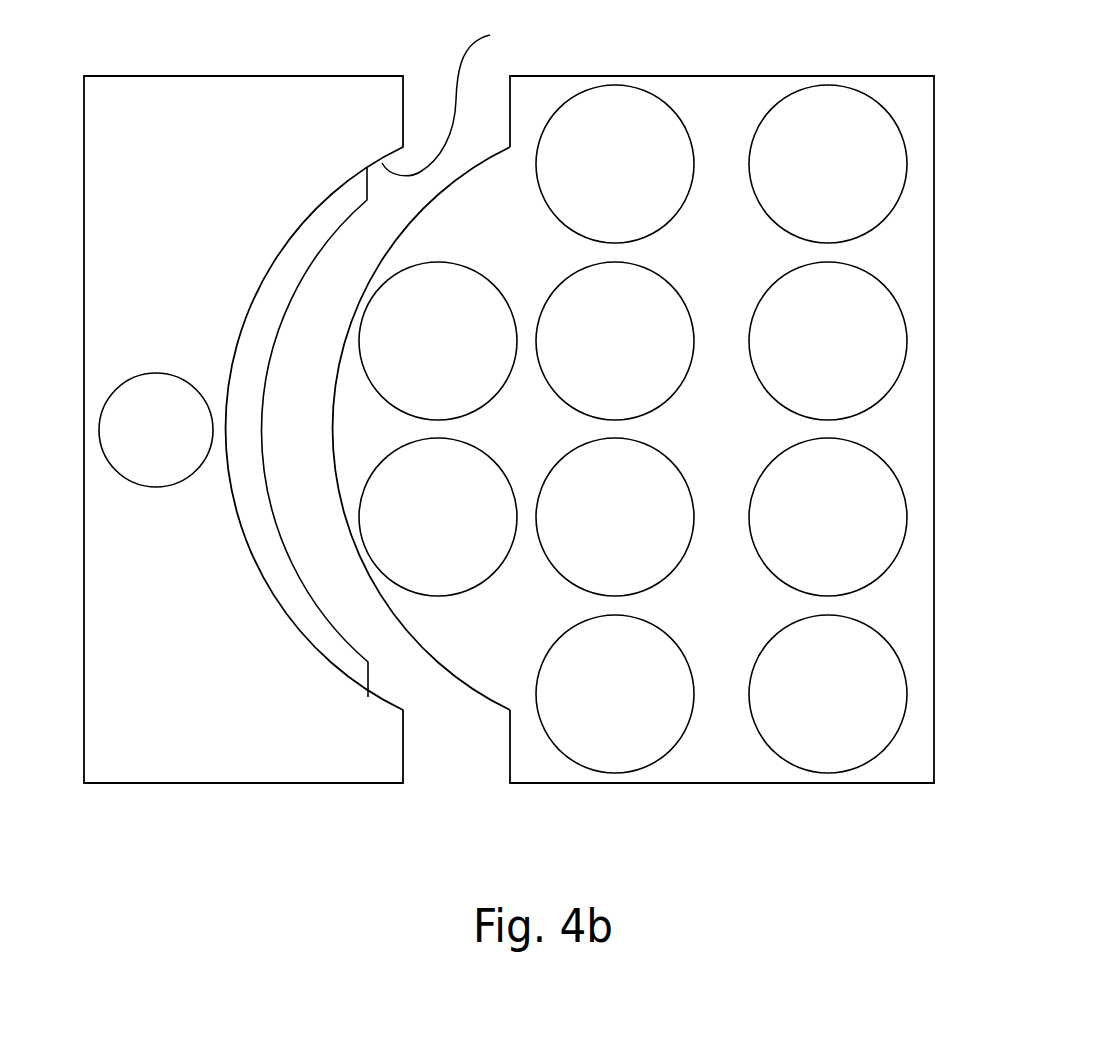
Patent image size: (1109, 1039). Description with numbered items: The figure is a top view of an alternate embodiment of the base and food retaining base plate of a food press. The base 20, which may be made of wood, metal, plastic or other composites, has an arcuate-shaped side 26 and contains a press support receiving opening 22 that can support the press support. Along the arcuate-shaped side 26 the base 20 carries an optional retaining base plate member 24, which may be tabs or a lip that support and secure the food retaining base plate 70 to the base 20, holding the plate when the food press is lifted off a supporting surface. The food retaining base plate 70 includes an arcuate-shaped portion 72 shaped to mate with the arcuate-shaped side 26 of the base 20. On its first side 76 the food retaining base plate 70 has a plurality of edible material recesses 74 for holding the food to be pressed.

The base 20 is at (192, 783).
The press support receiving opening 22 is at (156, 430).
The retaining base plate member 24 is at (313, 237).
The arcuate-shaped side 26 is at (450, 88).
The food retaining base plate 70 is at (703, 783).
The arcuate-shaped portion 72 is at (458, 682).
The edible material recesses 74 is at (617, 352).
The first side 76 is at (715, 110).